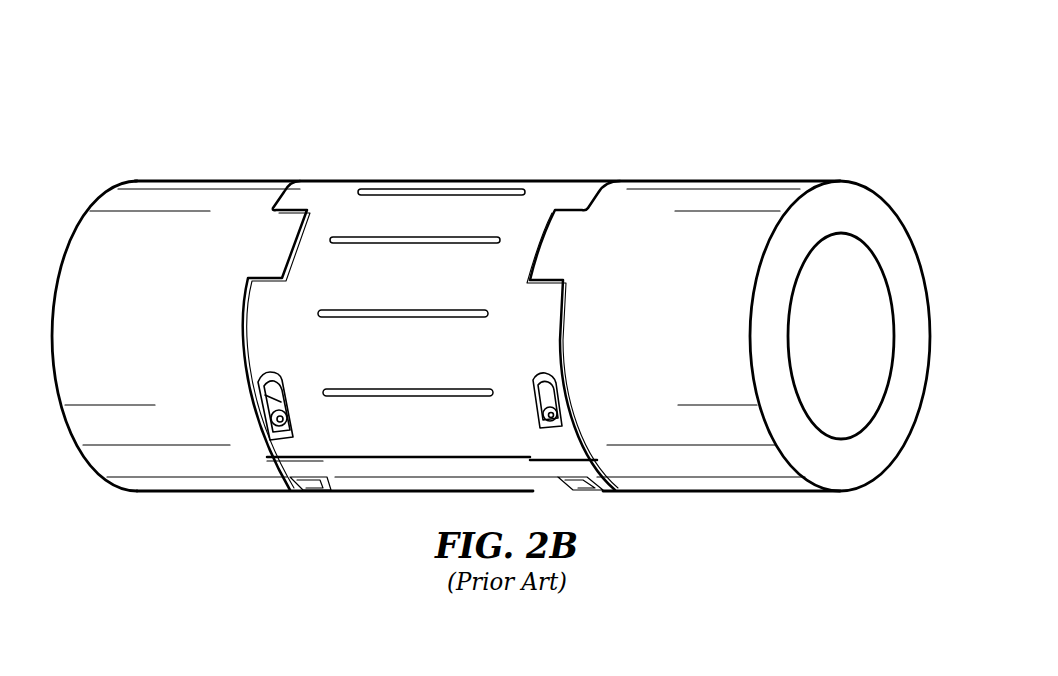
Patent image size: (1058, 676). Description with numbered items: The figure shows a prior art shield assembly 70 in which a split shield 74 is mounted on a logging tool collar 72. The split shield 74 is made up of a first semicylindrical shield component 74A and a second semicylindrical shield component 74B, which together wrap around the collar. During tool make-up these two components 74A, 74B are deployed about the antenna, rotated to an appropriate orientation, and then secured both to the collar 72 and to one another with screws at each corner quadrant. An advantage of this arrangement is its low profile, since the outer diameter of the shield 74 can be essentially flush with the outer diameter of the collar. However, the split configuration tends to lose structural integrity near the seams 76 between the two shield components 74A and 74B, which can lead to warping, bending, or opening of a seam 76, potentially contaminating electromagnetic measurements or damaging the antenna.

The shield assembly 70 is at (491, 312).
The logging tool collar 72 is at (680, 194).
The split shield 74 is at (431, 346).
The first semicylindrical shield component 74A is at (348, 438).
The second semicylindrical shield component 74B is at (397, 473).
The seam 76 is at (270, 399).